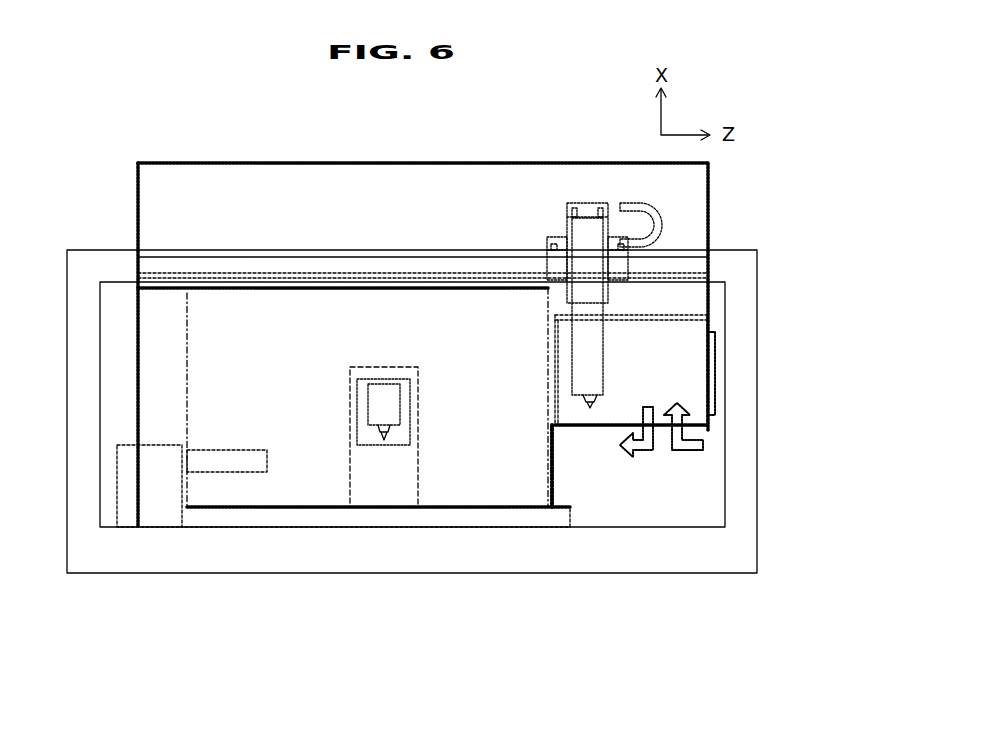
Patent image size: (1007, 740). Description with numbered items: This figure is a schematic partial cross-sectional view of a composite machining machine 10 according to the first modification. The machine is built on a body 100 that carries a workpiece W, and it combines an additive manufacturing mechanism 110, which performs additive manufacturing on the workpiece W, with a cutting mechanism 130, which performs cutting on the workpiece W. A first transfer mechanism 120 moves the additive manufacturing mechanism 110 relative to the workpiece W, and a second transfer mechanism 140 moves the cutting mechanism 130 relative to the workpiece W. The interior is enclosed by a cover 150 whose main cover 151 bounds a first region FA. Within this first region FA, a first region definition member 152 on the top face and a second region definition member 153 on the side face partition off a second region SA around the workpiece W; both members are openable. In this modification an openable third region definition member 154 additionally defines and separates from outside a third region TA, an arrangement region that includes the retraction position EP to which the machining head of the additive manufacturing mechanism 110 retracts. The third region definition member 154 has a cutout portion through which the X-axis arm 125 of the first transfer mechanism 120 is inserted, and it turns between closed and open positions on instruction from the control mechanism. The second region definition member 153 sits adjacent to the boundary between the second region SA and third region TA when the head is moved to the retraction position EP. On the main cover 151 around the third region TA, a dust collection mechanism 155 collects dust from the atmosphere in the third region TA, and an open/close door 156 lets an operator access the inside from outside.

The composite machining machine 10 is at (188, 145).
The body 100 is at (445, 588).
The additive manufacturing mechanism 110 is at (595, 410).
The first transfer mechanism 120 is at (107, 245).
The X-axis arm 125 is at (583, 230).
The cutting mechanism 130 is at (377, 372).
The second transfer mechanism 140 is at (427, 470).
The cover 150 is at (423, 308).
The main cover 151 is at (472, 162).
The first region definition member 152 is at (462, 290).
The second region definition member 153 is at (550, 340).
The third region definition member 154 is at (670, 313).
The dust collection mechanism 155 is at (658, 433).
The open/close door 156 is at (718, 342).
The first region FA is at (248, 163).
The second region SA is at (187, 323).
The third region TA is at (622, 320).
The retraction position EP is at (583, 243).
The workpiece W is at (207, 457).